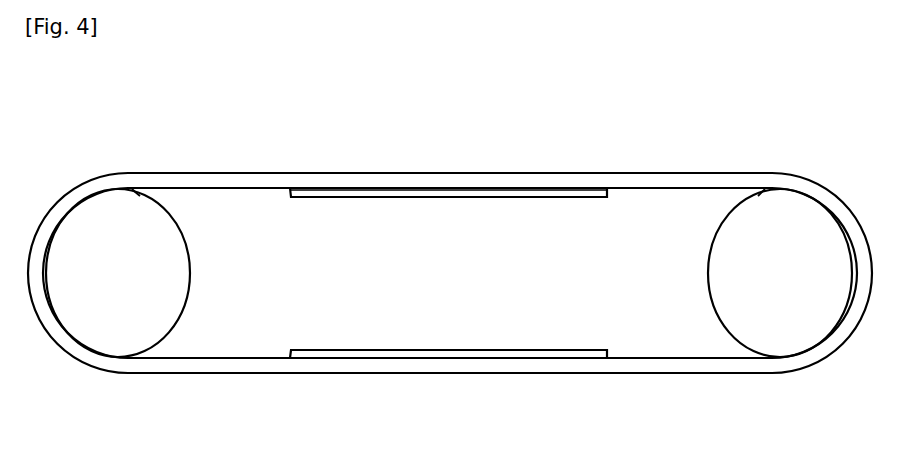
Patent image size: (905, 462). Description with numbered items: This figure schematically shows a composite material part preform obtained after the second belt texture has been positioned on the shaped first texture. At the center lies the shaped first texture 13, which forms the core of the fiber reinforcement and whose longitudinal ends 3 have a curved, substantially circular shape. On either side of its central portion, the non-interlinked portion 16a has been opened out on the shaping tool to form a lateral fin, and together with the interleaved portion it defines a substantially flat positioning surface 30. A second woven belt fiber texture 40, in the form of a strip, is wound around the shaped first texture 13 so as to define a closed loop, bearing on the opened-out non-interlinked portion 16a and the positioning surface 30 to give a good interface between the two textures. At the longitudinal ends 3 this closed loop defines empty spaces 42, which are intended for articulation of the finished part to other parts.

The shaped first texture 13 is at (738, 143).
The second woven belt fiber texture 40 is at (172, 182).
The empty spaces 42 is at (449, 273).
The longitudinal ends 3 is at (188, 252).
The non-interlinked portion 16a is at (607, 197).
The positioning surface 30 is at (422, 188).